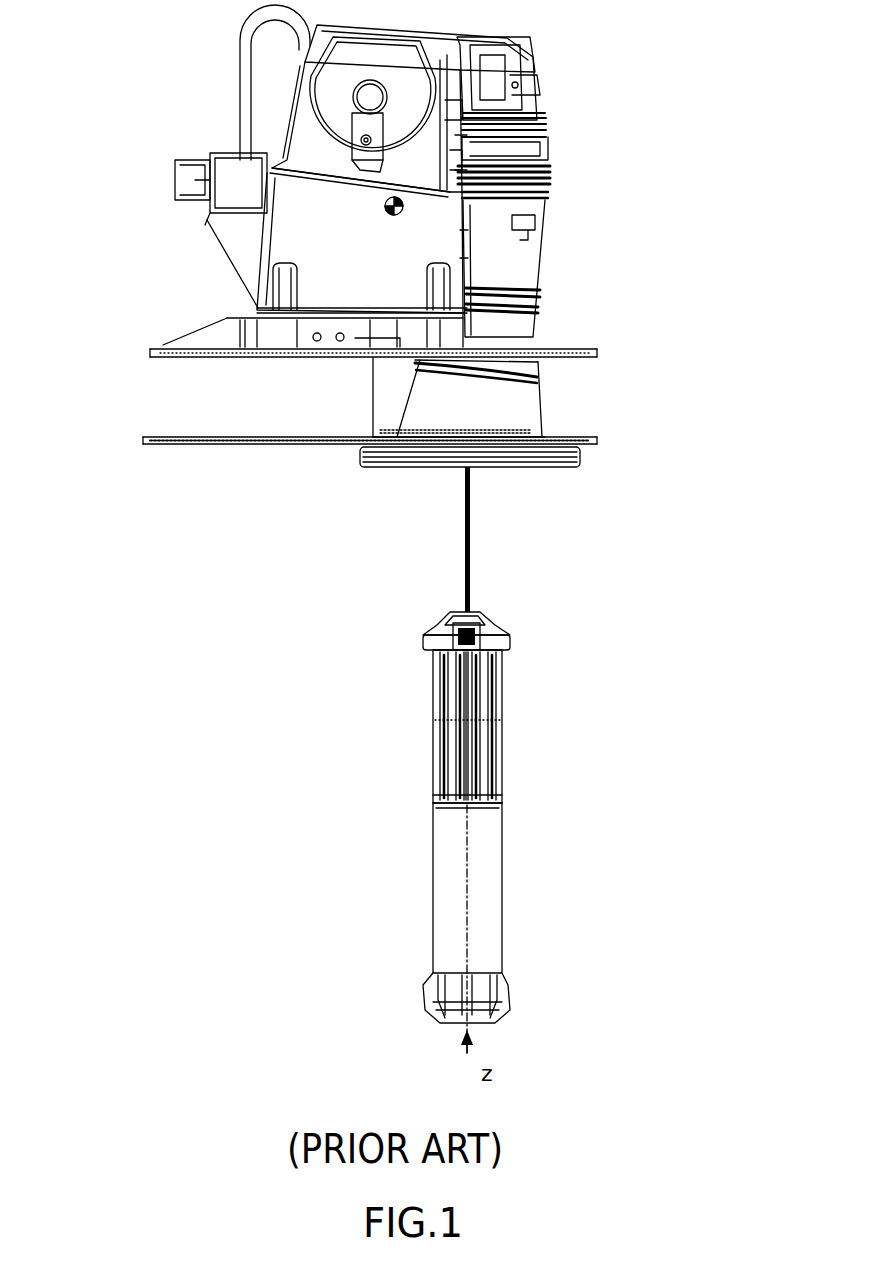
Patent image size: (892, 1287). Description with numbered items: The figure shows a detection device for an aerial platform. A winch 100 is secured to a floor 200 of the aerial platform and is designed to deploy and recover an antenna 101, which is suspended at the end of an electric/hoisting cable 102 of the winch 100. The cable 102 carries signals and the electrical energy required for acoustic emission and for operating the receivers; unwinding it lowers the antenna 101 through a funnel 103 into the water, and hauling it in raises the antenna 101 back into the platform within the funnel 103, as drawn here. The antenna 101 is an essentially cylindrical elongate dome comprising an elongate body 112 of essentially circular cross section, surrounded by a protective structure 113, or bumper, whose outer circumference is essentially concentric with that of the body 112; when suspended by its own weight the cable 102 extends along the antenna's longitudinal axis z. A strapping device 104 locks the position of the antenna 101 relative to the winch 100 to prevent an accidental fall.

The winch 100 is at (270, 240).
The floor 200 is at (147, 350).
The antenna 101 is at (375, 832).
The electric/hoisting cable 102 is at (470, 550).
The funnel 103 is at (540, 407).
The strapping device 104 is at (553, 173).
The elongate body 112 is at (432, 883).
The protective structure 113 is at (420, 640).